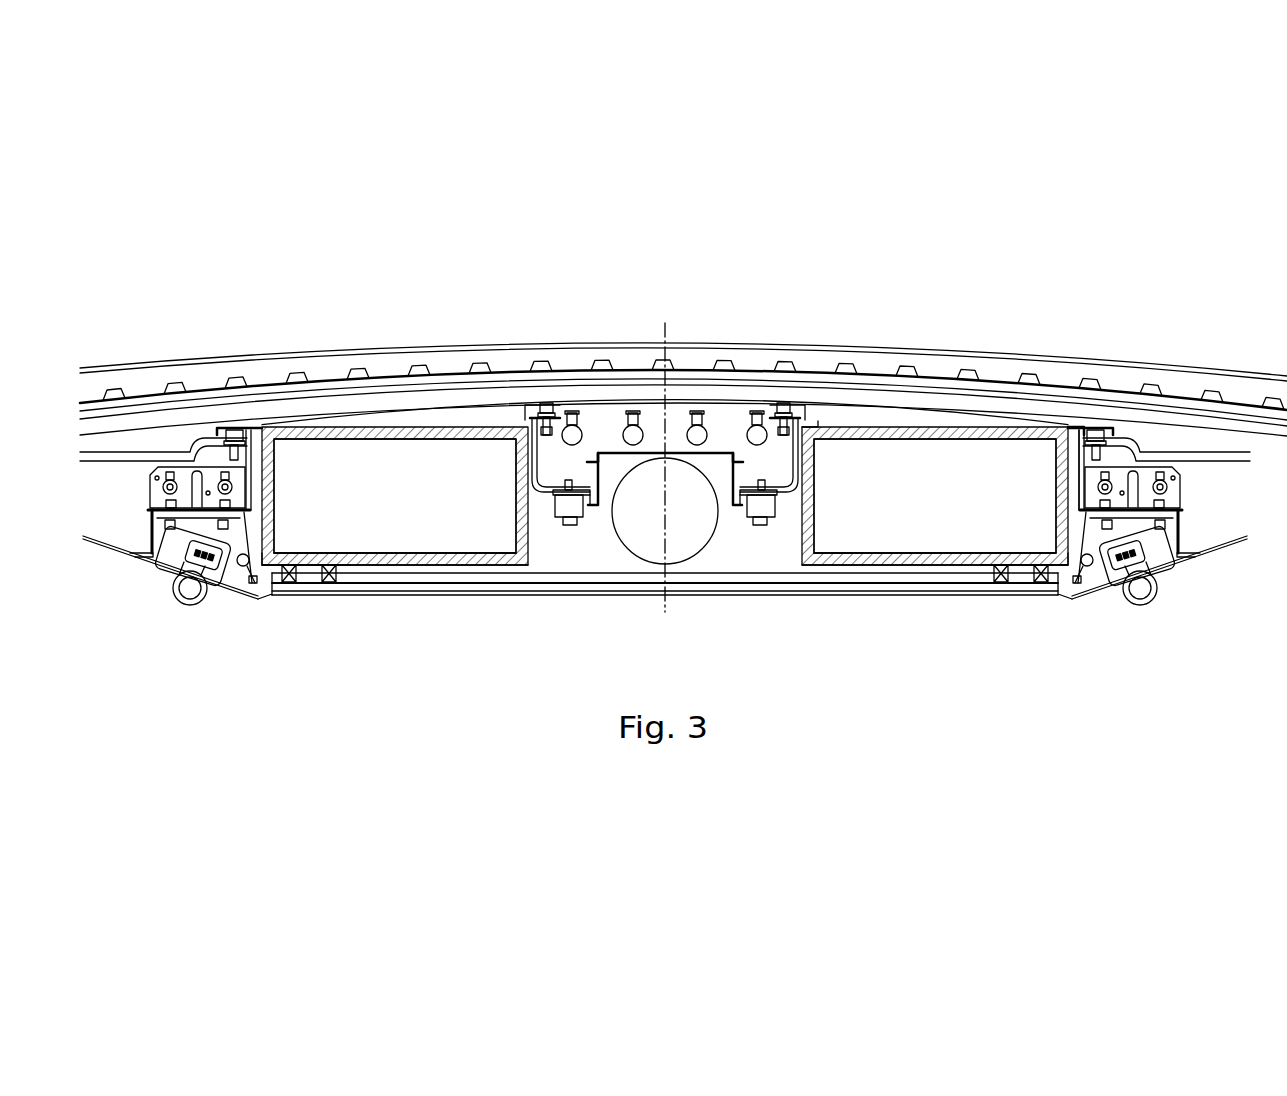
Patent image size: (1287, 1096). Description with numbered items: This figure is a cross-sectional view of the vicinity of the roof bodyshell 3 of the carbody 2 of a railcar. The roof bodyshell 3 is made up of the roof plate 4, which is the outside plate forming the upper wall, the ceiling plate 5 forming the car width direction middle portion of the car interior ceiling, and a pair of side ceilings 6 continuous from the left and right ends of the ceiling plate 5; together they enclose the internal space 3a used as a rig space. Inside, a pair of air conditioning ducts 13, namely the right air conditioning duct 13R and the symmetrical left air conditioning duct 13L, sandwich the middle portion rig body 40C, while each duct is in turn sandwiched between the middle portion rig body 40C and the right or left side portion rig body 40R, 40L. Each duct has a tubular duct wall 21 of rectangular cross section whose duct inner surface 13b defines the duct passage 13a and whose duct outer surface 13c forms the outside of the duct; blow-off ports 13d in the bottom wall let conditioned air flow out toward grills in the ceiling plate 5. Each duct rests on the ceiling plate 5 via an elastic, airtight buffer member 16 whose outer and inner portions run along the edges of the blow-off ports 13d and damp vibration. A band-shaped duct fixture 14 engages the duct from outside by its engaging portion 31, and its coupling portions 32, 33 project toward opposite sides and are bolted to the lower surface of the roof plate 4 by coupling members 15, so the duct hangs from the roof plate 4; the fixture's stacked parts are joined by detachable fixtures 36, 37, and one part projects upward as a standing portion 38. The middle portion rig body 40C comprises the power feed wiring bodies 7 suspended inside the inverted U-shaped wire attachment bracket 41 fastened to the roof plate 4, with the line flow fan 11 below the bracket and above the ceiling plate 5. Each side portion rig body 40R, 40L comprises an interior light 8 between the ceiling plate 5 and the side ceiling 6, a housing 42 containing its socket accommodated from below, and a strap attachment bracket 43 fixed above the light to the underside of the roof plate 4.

The carbody 2 is at (1237, 356).
The roof bodyshell 3 is at (1140, 378).
The internal space 3a is at (345, 420).
The roof plate 4 is at (1131, 388).
The ceiling plate 5 is at (1060, 594).
The side ceiling 6 is at (96, 537).
The power feed wiring body 7 is at (583, 426).
The interior light 8 is at (207, 605).
The line flow fan 11 is at (705, 548).
The air conditioning duct 13 is at (665, 389).
The right air conditioning duct 13R is at (460, 430).
The left air conditioning duct 13L is at (985, 425).
The duct passage 13a is at (665, 496).
The duct inner surface 13b is at (414, 556).
The duct outer surface 13c is at (468, 567).
The blow-off port 13d is at (308, 563).
The duct fixture 14 is at (523, 420).
The coupling member 15 is at (781, 408).
The buffer member 16 is at (336, 573).
The duct wall 21 is at (382, 430).
The engaging portion 31 is at (797, 500).
The coupling portion 32 is at (782, 418).
The coupling portion 33 is at (1108, 430).
The fixture 36 is at (818, 421).
The fixture 37 is at (1070, 425).
The standing portion 38 is at (813, 417).
The middle portion rig body 40C is at (606, 542).
The left side portion rig body 40L is at (1190, 522).
The right side portion rig body 40R is at (140, 522).
The wire attachment bracket 41 is at (790, 488).
The housing 42 is at (170, 538).
The strap attachment bracket 43 is at (128, 473).